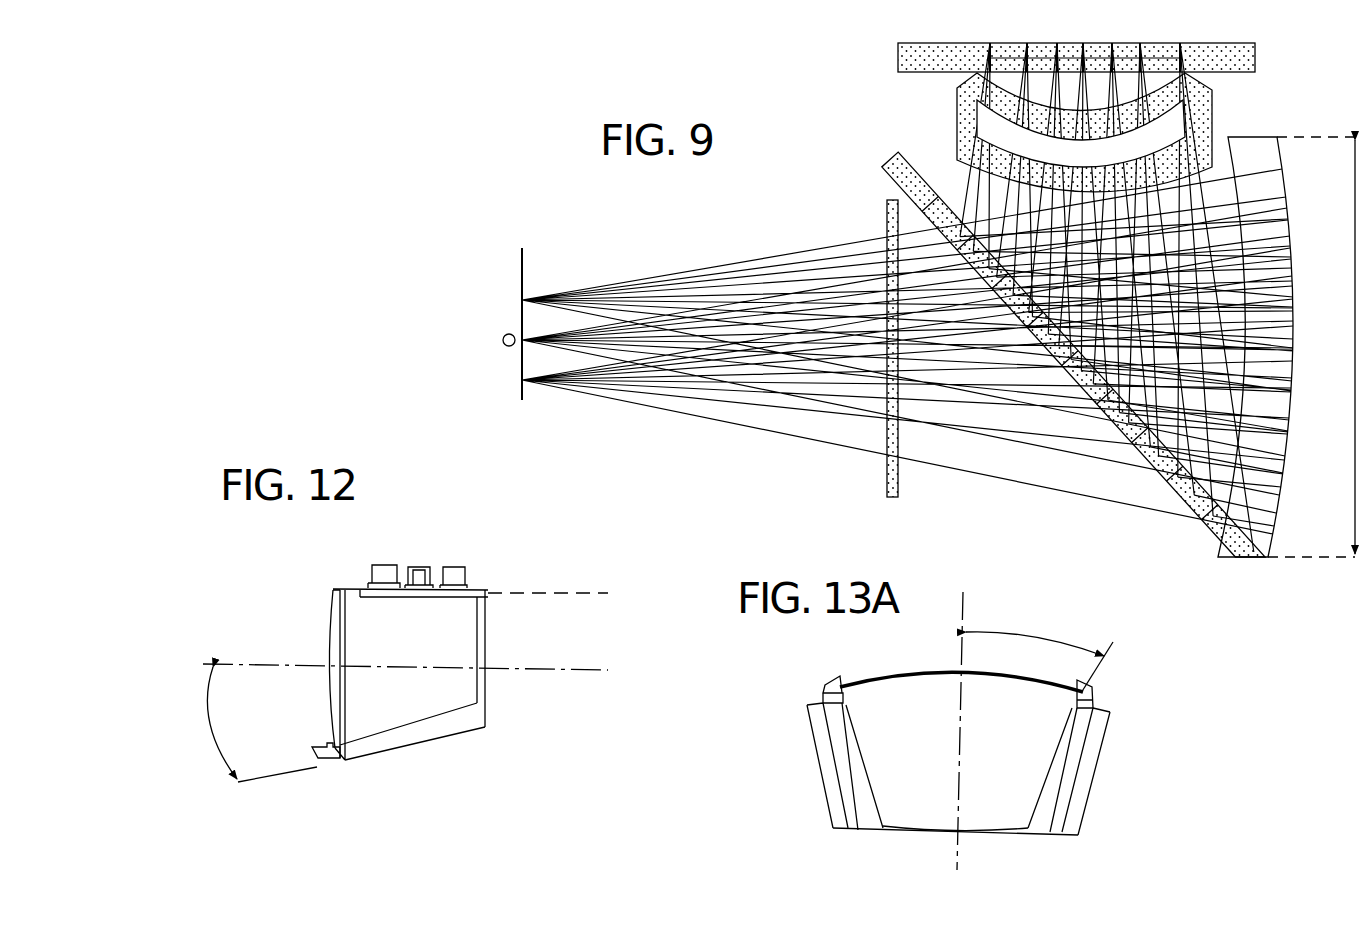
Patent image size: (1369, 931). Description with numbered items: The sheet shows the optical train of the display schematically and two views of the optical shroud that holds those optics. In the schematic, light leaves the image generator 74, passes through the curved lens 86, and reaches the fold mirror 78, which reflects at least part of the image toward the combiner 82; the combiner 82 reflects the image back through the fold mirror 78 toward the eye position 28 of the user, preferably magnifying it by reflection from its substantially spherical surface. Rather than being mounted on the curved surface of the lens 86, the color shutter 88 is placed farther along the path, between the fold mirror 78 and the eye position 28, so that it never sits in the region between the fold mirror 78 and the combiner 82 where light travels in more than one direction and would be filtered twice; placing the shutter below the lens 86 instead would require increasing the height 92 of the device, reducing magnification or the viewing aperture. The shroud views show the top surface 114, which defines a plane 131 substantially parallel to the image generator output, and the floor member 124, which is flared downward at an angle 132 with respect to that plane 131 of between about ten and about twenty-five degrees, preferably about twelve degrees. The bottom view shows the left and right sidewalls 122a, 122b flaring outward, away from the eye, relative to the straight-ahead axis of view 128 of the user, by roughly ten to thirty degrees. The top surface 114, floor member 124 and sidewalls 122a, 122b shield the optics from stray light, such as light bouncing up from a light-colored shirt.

In FIG. 9, the image generator 74 is at (1258, 58).
In FIG. 9, the lens 86 is at (1212, 125).
In FIG. 9, the combiner 82 is at (1270, 325).
In FIG. 9, the height 92 is at (1356, 205).
In FIG. 9, the fold mirror 78 is at (1212, 512).
In FIG. 9, the color shutter 88 is at (888, 478).
In FIG. 9, the eye position 28 is at (503, 336).
In FIG. 12, the top surface 114 is at (358, 589).
In FIG. 12, the sidewall 122a is at (437, 645).
In FIG. 13A, the sidewall 122a is at (1098, 700).
In FIG. 12, the plane 131 is at (532, 592).
In FIG. 12, the angle 132 is at (227, 727).
In FIG. 13A, the straight-ahead axis of view 128 is at (963, 603).
In FIG. 13A, the floor member 124 is at (1037, 640).
In FIG. 13A, the sidewall 122b is at (823, 695).